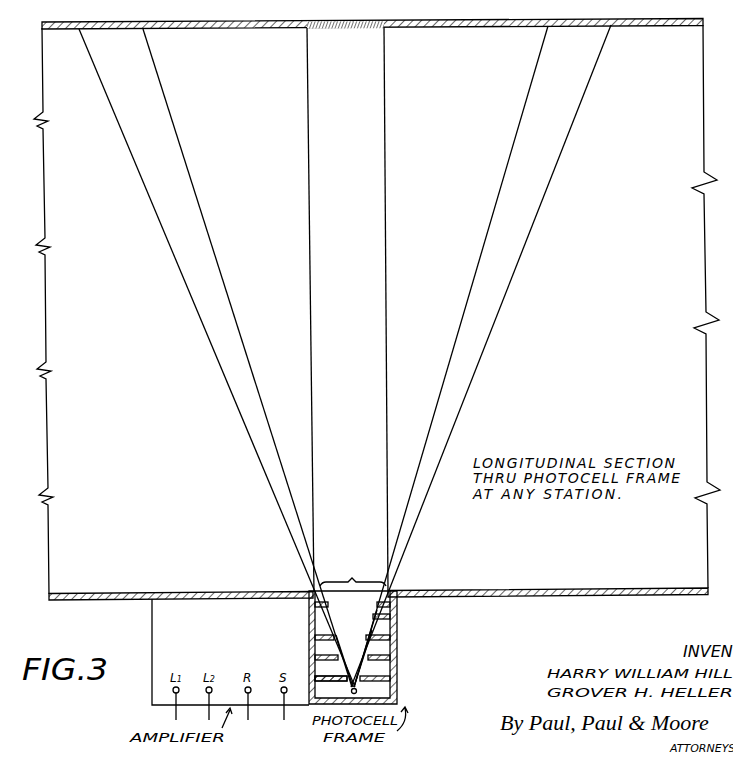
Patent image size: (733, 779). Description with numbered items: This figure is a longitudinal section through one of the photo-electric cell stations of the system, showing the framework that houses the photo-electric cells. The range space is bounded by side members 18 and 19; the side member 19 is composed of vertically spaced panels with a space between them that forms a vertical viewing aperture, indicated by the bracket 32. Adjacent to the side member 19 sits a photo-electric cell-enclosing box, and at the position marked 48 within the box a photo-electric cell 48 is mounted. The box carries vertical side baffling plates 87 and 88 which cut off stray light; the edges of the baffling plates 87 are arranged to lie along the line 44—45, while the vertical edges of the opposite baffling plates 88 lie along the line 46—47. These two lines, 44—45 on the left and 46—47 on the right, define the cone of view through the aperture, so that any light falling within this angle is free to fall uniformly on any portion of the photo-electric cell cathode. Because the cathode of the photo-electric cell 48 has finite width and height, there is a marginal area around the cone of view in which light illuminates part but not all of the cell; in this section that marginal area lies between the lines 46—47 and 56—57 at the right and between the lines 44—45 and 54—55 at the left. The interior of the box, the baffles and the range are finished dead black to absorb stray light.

The side member 18 is at (430, 21).
The side member 19 is at (535, 589).
The vertical viewing aperture 32 is at (347, 309).
The cone-of-view boundary line 44 is at (338, 668).
The cone-of-view boundary line 45 is at (163, 80).
The cone-of-view boundary line 46 is at (374, 625).
The cone-of-view boundary line 47 is at (530, 88).
The photo-electric cell 48 is at (357, 691).
The marginal-area boundary line 54 is at (344, 657).
The marginal-area boundary line 55 is at (124, 133).
The marginal-area boundary line 56 is at (370, 638).
The marginal-area boundary line 57 is at (585, 93).
The vertical side baffling plate 87 is at (312, 606).
The vertical side baffling plate 88 is at (397, 606).